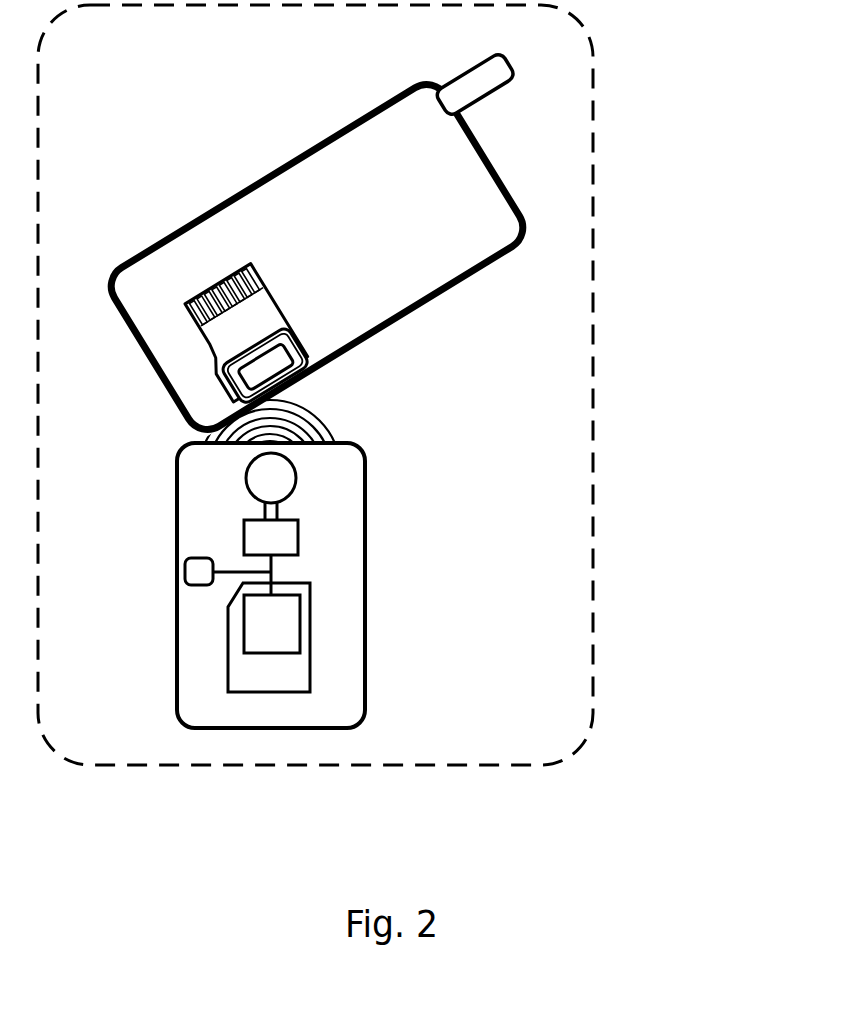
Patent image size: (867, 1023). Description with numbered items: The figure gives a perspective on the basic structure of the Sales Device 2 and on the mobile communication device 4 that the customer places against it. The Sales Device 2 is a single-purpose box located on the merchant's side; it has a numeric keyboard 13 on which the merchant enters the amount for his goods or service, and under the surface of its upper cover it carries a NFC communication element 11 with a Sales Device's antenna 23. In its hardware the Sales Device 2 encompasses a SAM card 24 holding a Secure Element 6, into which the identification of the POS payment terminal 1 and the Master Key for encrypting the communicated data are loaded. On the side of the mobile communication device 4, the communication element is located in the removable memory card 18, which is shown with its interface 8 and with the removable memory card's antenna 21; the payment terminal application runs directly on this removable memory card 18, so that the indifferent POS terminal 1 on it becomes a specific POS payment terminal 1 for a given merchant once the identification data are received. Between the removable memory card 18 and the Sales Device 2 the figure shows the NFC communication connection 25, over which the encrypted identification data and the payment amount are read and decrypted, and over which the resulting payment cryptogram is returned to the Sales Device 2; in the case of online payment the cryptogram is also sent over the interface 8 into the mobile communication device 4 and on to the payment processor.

The POS payment terminal 1 is at (593, 182).
The mobile communication device 4 is at (528, 233).
The interface 8 is at (257, 292).
The removable memory card 18 is at (263, 318).
The removable memory card's antenna 21 is at (312, 380).
The communication connection 25 is at (340, 408).
The Sales Device 2 is at (365, 458).
The Sales Device's antenna 23 is at (293, 493).
The NFC communication element 11 is at (298, 537).
The Secure Element 6 is at (300, 622).
The SAM card 24 is at (293, 680).
The keyboard 13 is at (198, 572).